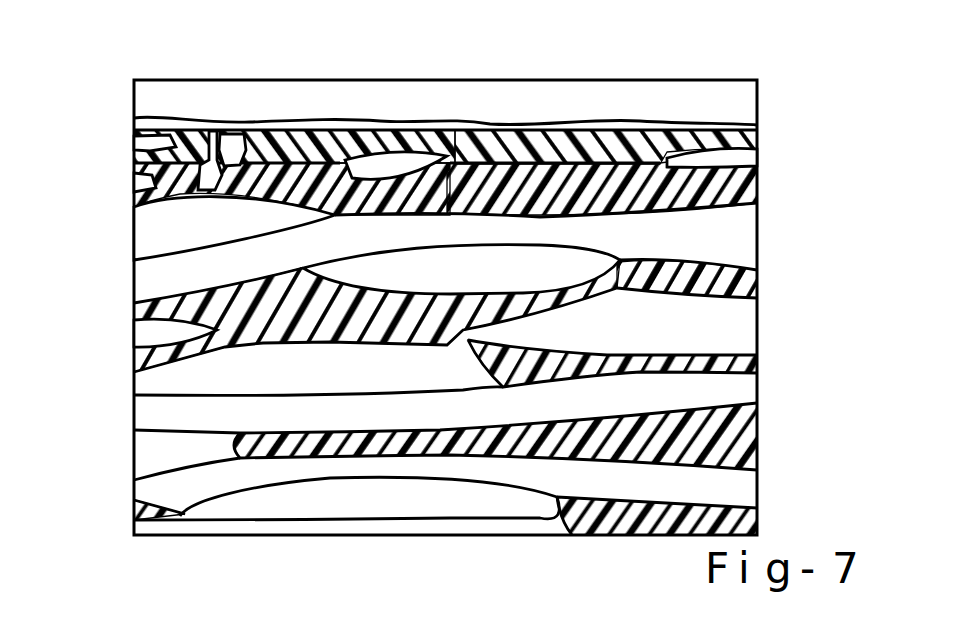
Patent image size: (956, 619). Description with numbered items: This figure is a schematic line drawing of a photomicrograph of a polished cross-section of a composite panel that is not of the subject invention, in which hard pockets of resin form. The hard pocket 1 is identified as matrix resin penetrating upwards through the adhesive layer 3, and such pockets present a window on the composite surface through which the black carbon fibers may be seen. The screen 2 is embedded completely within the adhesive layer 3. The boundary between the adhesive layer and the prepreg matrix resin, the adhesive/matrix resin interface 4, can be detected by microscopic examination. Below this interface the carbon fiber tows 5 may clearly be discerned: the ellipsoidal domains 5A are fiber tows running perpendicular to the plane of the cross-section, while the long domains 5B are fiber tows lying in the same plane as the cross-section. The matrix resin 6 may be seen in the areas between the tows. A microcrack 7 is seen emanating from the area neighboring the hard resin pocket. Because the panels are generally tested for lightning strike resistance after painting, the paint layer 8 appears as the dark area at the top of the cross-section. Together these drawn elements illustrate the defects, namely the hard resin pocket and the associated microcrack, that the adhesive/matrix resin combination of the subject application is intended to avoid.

The hard pocket 1 is at (220, 133).
The screen 2 is at (453, 143).
The adhesive layer 3 is at (345, 142).
The adhesive/matrix resin interface 4 is at (337, 142).
The carbon fiber tows 5 is at (147, 277).
The ellipsoidal domains 5A is at (592, 270).
The long domains 5B is at (145, 420).
The matrix resin 6 is at (740, 443).
The microcrack 7 is at (147, 180).
The paint layer 8 is at (601, 121).